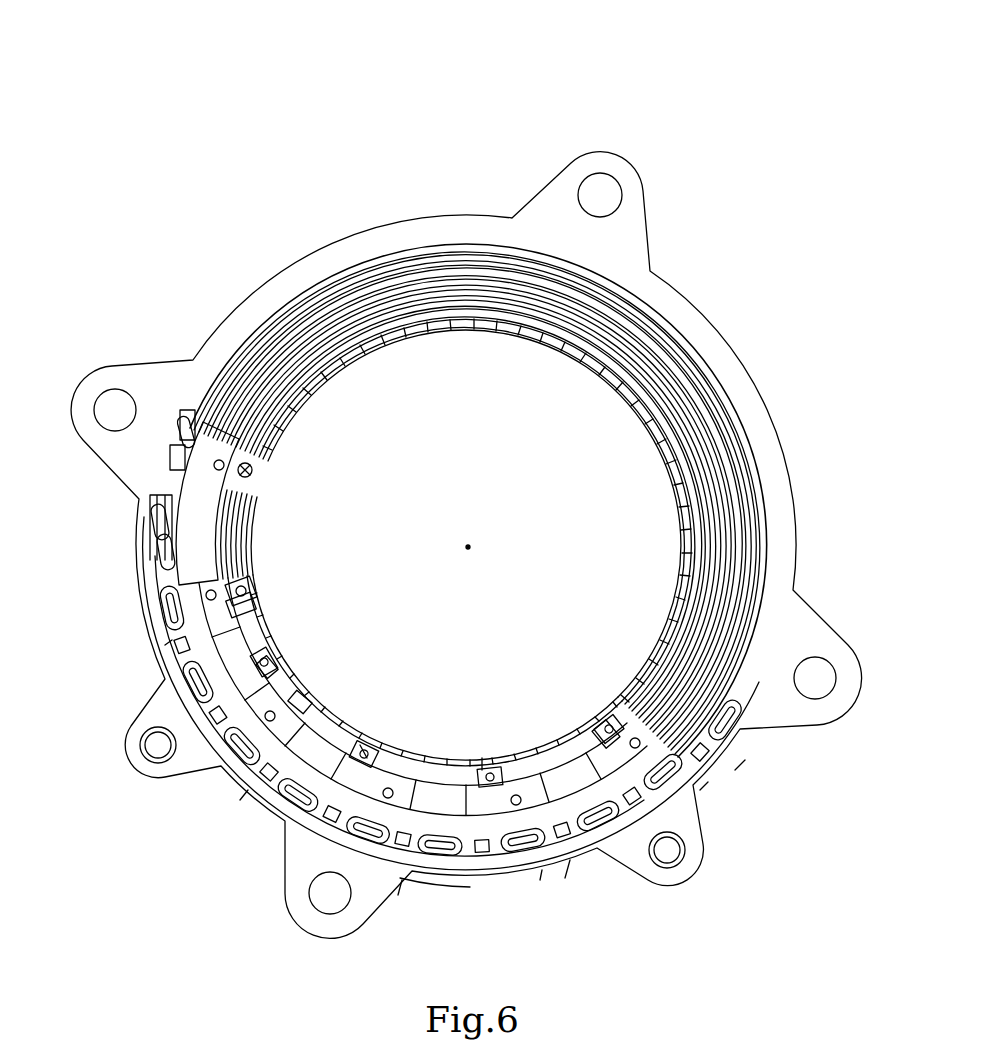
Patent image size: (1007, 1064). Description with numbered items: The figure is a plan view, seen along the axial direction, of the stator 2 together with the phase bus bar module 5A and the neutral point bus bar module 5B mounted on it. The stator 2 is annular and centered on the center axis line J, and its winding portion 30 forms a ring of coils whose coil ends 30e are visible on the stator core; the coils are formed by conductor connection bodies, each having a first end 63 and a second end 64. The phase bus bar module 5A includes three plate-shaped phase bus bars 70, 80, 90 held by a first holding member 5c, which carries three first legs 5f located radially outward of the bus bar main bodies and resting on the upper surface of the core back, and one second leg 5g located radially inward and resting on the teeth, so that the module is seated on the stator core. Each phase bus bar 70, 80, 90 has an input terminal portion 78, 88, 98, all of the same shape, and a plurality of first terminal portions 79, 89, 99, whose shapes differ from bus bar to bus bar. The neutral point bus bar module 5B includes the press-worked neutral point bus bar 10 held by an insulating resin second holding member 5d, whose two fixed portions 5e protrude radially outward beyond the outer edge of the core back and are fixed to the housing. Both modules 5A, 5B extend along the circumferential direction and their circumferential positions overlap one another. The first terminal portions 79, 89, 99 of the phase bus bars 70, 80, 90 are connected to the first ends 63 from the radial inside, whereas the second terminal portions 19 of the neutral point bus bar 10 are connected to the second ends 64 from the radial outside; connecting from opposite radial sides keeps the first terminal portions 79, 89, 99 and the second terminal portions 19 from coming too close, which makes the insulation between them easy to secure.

The stator 2 is at (695, 112).
The neutral point bus bar 10 is at (750, 682).
The winding portion 30 is at (625, 287).
The coil end 30e is at (650, 320).
The phase bus bar module 5A is at (205, 432).
The neutral point bus bar module 5B is at (136, 491).
The first holding member 5c is at (232, 368).
The second holding member 5d is at (150, 605).
The fixed portion 5e is at (185, 790).
The first leg 5f is at (560, 765).
The second leg 5g is at (260, 612).
The second terminal portion 19 is at (160, 565).
The first end 63 is at (180, 428).
The second end 64 is at (152, 520).
The phase bus bar 70 is at (420, 895).
The input terminal portion 78 is at (367, 758).
The first terminal portion 79 is at (185, 418).
The phase bus bar 80 is at (565, 878).
The input terminal portion 88 is at (482, 770).
The first terminal portion 89 is at (165, 645).
The phase bus bar 90 is at (735, 770).
The input terminal portion 98 is at (605, 740).
The first terminal portion 99 is at (240, 800).
The center axis line J is at (468, 547).